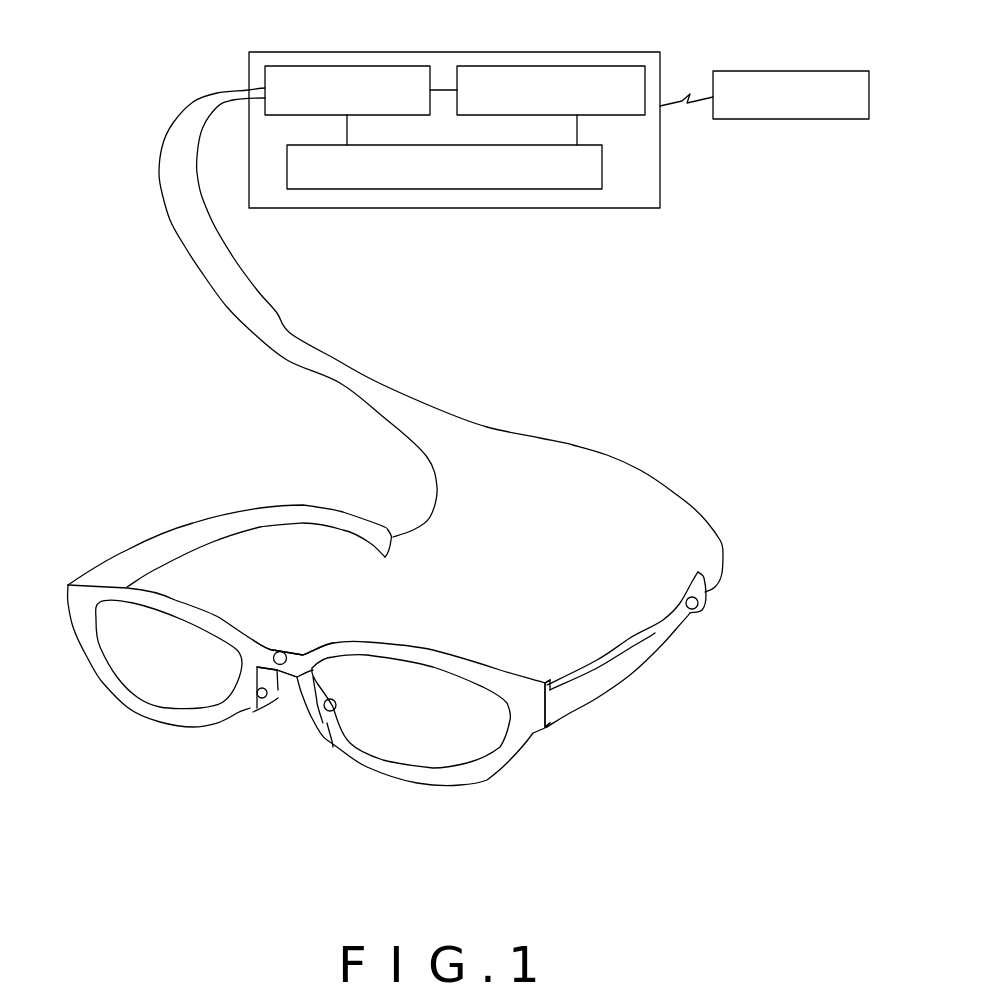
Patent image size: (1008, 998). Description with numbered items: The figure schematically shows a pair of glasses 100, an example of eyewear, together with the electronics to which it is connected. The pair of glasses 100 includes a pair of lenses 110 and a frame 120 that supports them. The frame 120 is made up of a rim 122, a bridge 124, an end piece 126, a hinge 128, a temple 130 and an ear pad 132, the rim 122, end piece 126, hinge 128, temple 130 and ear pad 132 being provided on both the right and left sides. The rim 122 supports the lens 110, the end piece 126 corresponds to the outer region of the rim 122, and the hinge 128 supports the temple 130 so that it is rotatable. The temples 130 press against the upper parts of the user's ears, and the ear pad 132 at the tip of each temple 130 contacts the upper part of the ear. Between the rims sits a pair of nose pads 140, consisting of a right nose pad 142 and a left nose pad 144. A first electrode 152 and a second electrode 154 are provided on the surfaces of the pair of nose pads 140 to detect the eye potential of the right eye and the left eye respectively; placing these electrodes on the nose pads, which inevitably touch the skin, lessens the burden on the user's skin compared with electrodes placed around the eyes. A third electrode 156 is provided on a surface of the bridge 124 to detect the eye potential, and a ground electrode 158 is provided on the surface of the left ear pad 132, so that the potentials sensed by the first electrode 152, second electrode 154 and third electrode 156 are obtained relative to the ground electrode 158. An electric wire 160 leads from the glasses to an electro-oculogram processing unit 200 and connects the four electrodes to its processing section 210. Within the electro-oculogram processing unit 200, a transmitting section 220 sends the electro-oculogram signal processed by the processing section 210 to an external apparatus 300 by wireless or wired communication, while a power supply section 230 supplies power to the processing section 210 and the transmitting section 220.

The pair of glasses 100 is at (168, 475).
The lens 110 is at (138, 664).
The frame 120 is at (690, 775).
The rim 122 is at (433, 660).
The bridge 124 is at (307, 650).
The end piece 126 is at (550, 727).
The hinge 128 is at (550, 708).
The temple 130 is at (663, 630).
The ear pad 132 is at (707, 602).
The pair of nose pads 140 is at (287, 712).
The right nose pad 142 is at (257, 705).
The left nose pad 144 is at (333, 727).
The first electrode 152 is at (257, 690).
The second electrode 154 is at (333, 700).
The third electrode 156 is at (280, 652).
The ground electrode 158 is at (683, 595).
The electric wire 160 is at (223, 308).
The electro-oculogram processing unit 200 is at (303, 52).
The processing section 210 is at (406, 66).
The transmitting section 220 is at (602, 66).
The power supply section 230 is at (602, 160).
The external apparatus 300 is at (765, 71).